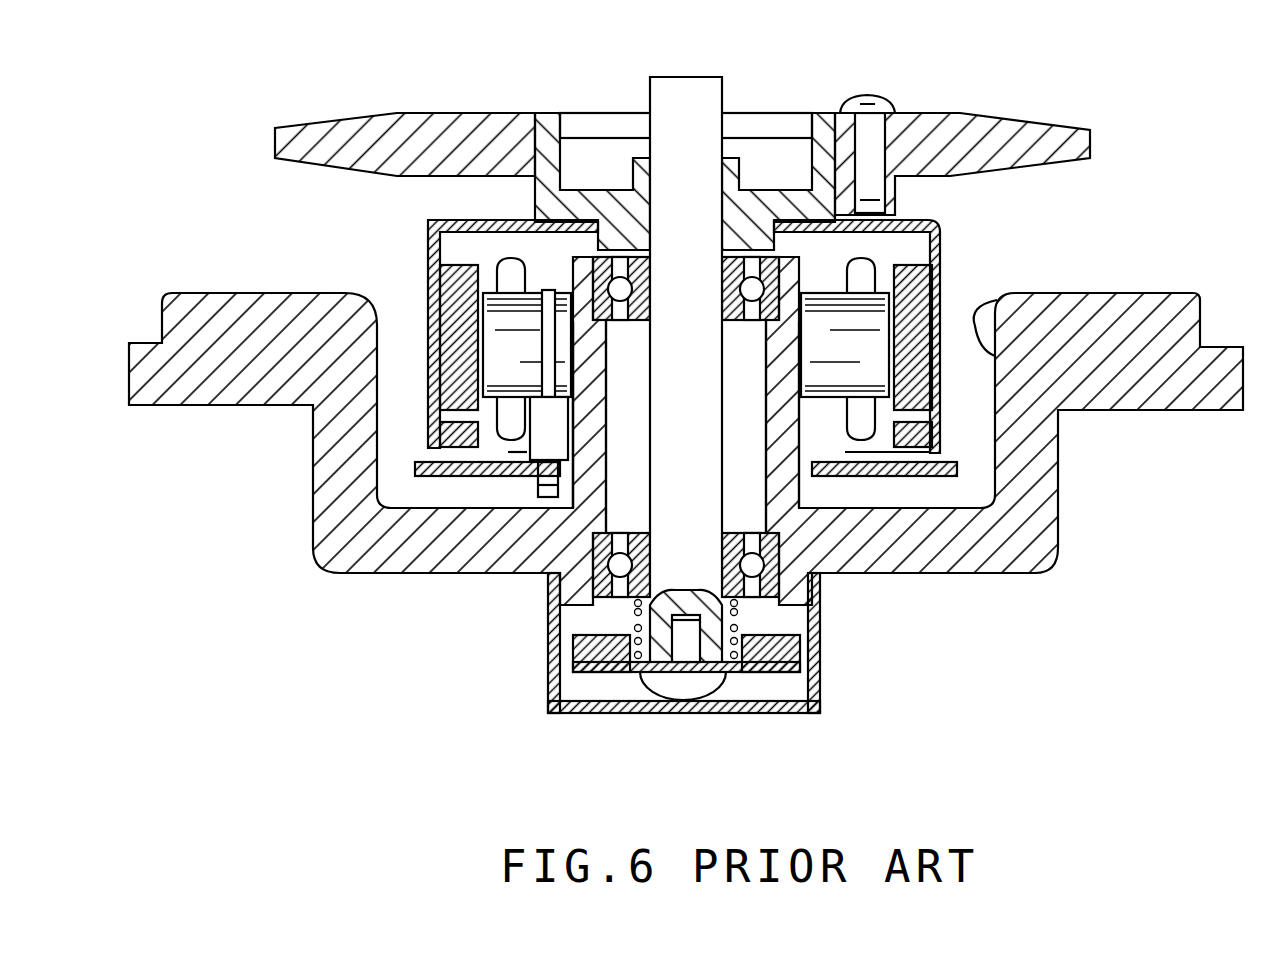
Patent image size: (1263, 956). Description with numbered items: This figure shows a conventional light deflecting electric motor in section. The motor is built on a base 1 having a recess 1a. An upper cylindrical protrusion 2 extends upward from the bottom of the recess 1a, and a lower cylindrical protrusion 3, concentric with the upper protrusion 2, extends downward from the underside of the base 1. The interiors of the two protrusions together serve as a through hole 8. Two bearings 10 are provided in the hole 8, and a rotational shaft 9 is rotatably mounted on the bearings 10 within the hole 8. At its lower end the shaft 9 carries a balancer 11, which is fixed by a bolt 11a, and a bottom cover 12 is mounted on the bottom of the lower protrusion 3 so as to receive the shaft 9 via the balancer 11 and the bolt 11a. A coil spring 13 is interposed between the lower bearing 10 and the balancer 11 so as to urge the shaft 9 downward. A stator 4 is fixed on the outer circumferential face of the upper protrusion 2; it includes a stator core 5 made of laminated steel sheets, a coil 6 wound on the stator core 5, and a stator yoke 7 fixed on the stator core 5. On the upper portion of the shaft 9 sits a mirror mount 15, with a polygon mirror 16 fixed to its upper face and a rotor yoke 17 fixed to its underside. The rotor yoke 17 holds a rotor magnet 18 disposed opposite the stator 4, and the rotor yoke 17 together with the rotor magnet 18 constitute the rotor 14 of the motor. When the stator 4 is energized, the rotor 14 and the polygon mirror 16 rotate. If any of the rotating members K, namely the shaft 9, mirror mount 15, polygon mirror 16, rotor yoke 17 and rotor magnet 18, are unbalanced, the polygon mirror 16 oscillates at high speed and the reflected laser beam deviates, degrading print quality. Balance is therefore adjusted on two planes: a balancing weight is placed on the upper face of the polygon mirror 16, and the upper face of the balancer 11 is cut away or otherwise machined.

The rotating members K is at (665, 122).
The base 1 is at (1164, 298).
The recess 1a is at (985, 318).
The upper cylindrical protrusion 2 is at (805, 508).
The lower cylindrical protrusion 3 is at (722, 680).
The stator 4 is at (478, 262).
The stator core 5 is at (452, 478).
The coil 6 is at (540, 485).
The stator yoke 7 is at (415, 475).
The through hole 8 is at (570, 528).
The rotational shaft 9 is at (723, 88).
The bearings 10 is at (830, 256).
The balancer 11 is at (585, 674).
The bolt 11a is at (725, 690).
The bottom cover 12 is at (804, 714).
The coil spring 13 is at (636, 625).
The rotor 14 is at (985, 465).
The mirror mount 15 is at (895, 188).
The polygon mirror 16 is at (1036, 126).
The rotor yoke 17 is at (932, 412).
The rotor magnet 18 is at (962, 453).